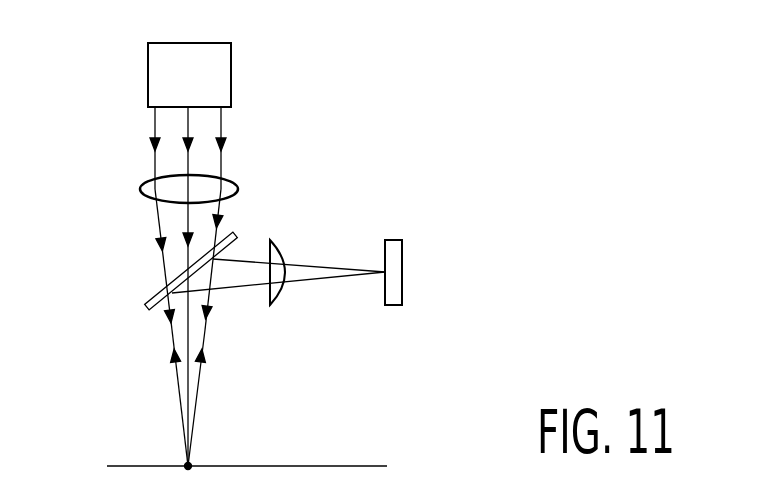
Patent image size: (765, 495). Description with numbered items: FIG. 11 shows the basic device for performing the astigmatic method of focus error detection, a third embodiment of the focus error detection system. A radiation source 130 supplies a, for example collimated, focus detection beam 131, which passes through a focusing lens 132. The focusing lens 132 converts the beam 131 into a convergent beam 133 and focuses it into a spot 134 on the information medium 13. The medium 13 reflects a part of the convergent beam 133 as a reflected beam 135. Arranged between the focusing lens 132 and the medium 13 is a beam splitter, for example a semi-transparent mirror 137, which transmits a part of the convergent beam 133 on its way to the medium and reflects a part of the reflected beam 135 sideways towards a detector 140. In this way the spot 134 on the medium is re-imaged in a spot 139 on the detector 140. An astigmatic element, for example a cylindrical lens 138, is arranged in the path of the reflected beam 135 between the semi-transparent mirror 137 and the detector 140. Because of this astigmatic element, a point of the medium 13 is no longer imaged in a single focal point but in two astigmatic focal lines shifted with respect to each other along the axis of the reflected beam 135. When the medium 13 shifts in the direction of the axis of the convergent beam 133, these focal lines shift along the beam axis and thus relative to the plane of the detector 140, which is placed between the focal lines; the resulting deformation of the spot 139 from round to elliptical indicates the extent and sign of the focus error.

The radiation source 130 is at (232, 72).
The focus detection beam 131 is at (210, 133).
The focusing lens 132 is at (140, 190).
The convergent beam 133 is at (172, 225).
The semi-transparent mirror 137 is at (150, 299).
The reflected beam 135 is at (196, 393).
The spot 134 is at (186, 464).
The information medium 13 is at (330, 466).
The spot on the detector 139 is at (384, 271).
The cylindrical lens 138 is at (277, 306).
The detector 140 is at (393, 306).